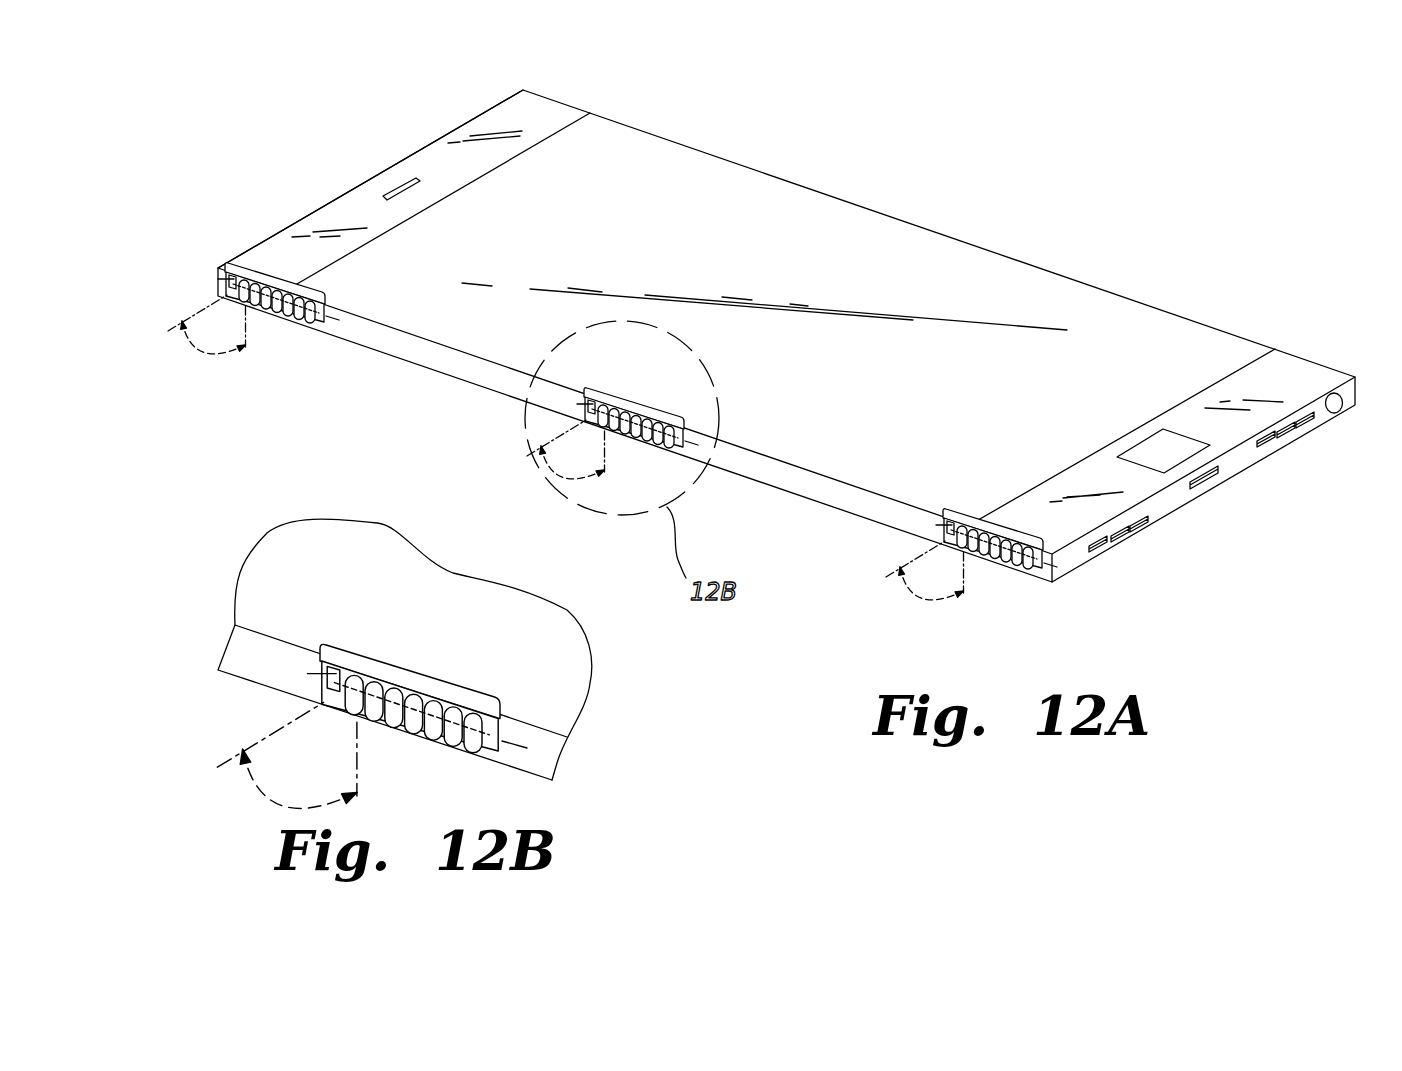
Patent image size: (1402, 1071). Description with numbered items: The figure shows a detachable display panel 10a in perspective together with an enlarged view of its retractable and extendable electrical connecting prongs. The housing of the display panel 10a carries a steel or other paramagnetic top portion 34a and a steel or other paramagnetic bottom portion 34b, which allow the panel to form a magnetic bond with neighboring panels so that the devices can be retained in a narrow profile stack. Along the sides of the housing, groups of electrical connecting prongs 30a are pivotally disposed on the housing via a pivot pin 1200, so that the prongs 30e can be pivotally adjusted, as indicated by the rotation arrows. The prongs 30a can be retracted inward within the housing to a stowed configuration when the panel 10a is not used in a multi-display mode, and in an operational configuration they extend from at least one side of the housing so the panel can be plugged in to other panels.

In FIG. 12A, the display panel 10a is at (688, 245).
In FIG. 12B, the display panel 10a is at (405, 649).
In FIG. 12A, the paramagnetic top portion 34a is at (447, 167).
In FIG. 12A, the paramagnetic bottom portion 34b is at (1265, 383).
In FIG. 12A, the prongs 30e is at (280, 283).
In FIG. 12A, the electrical connecting prongs 30a is at (633, 398).
In FIG. 12B, the electrical connecting prongs 30a is at (409, 668).
In FIG. 12A, the pivot pin 1200 is at (323, 327).
In FIG. 12B, the pivot pin 1200 is at (502, 710).